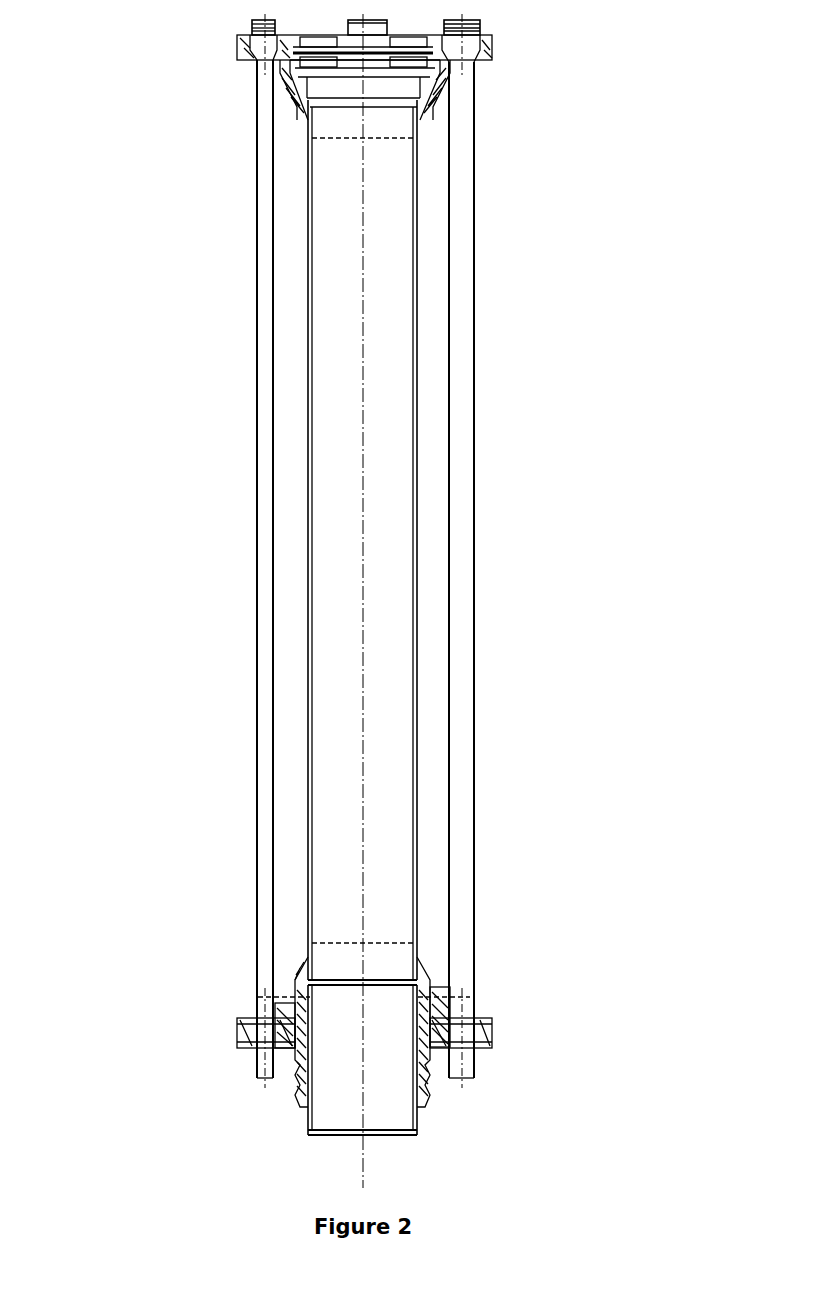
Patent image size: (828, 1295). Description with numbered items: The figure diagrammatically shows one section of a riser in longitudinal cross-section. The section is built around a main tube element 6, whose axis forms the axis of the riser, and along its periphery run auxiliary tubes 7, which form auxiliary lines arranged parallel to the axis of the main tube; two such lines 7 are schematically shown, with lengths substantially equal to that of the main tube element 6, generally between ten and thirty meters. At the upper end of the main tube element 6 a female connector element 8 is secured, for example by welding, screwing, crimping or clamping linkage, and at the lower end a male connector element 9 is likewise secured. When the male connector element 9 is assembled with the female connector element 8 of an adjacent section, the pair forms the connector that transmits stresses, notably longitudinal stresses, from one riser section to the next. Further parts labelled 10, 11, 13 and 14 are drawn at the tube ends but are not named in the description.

The main tube element 6 is at (420, 381).
The auxiliary tube 7 is at (472, 423).
The female connector element 8 is at (420, 103).
The male connector element 9 is at (438, 985).
The lower tube connector 10 is at (422, 1123).
The tie rod nut 11 is at (442, 1045).
The upper tie rod nut 13 is at (255, 35).
The lower tie rod nut 14 is at (257, 1060).